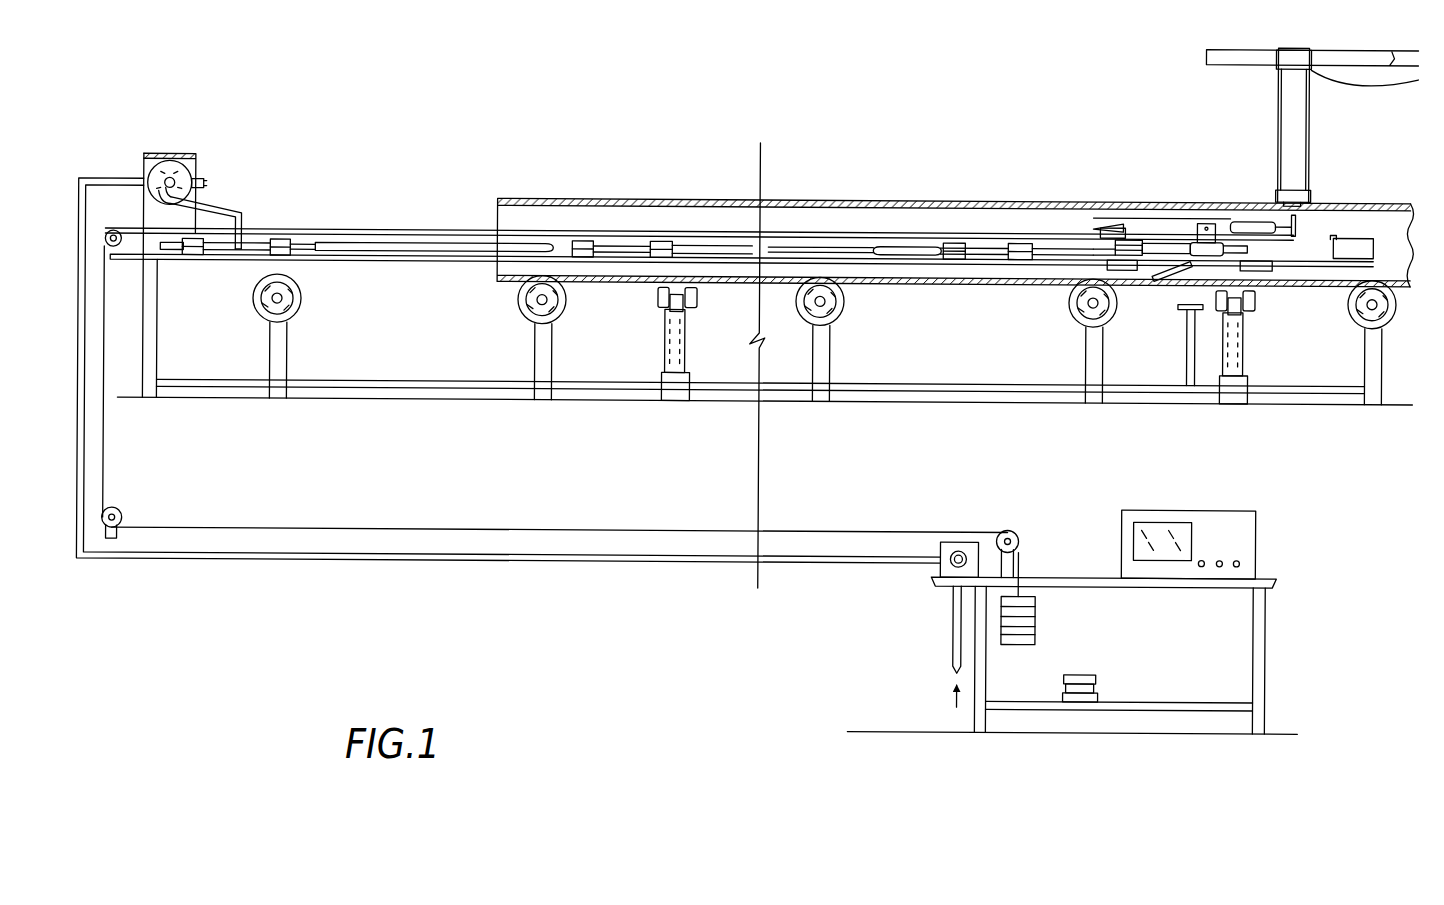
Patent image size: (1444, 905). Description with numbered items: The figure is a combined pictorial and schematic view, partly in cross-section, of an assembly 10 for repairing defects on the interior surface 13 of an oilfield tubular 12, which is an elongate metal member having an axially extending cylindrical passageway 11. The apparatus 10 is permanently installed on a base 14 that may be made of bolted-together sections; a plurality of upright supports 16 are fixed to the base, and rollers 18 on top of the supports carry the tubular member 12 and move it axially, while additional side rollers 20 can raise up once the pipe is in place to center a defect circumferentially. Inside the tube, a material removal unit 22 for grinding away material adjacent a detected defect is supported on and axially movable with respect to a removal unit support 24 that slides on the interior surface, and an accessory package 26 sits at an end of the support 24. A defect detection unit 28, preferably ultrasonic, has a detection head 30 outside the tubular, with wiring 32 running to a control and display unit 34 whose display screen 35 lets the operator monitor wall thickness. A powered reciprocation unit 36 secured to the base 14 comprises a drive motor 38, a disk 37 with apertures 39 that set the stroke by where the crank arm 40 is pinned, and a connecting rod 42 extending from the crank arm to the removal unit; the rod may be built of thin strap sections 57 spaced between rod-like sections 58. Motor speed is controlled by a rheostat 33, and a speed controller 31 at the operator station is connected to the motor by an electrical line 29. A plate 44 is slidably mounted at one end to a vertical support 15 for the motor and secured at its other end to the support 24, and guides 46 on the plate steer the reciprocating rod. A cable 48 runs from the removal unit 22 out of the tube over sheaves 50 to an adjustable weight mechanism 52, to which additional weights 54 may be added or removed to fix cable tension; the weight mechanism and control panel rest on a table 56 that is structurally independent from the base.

The assembly 10 is at (871, 152).
The cylindrical passageway 11 is at (936, 222).
The oilfield tubular 12 is at (672, 200).
The interior surface 13 is at (877, 213).
The base 14 is at (992, 401).
The vertical support 15 is at (158, 362).
The upright support 16 is at (826, 358).
The rollers 18 is at (300, 308).
The side rollers 20 is at (656, 298).
The material removal unit 22 is at (1247, 219).
The removal unit support 24 is at (1305, 268).
The accessory package 26 is at (1350, 234).
The defect detection unit 28 is at (1242, 99).
The electrical line 29 is at (497, 562).
The detection head 30 is at (1310, 192).
The speed controller 31 is at (950, 562).
The wiring 32 is at (1355, 80).
The rheostat 33 is at (206, 187).
The control and display unit 34 is at (1247, 527).
The display screen 35 is at (1165, 528).
The powered reciprocation unit 36 is at (207, 200).
The disk 37 is at (145, 162).
The drive motor 38 is at (199, 181).
The apertures 39 is at (172, 164).
The crank arm 40 is at (240, 219).
The connecting rod 42 is at (441, 245).
The plate 44 is at (410, 264).
The guides 46 is at (582, 242).
The cable 48 is at (372, 232).
The sheaves 50 is at (125, 519).
The adjustable weight mechanism 52 is at (1037, 618).
The additional weights 54 is at (1100, 688).
The table 56 is at (1113, 585).
The thin strap sections 57 is at (807, 250).
The rod-like sections 58 is at (620, 246).